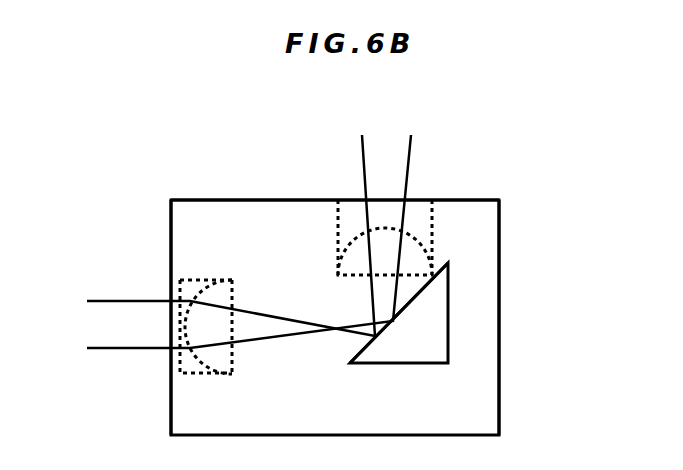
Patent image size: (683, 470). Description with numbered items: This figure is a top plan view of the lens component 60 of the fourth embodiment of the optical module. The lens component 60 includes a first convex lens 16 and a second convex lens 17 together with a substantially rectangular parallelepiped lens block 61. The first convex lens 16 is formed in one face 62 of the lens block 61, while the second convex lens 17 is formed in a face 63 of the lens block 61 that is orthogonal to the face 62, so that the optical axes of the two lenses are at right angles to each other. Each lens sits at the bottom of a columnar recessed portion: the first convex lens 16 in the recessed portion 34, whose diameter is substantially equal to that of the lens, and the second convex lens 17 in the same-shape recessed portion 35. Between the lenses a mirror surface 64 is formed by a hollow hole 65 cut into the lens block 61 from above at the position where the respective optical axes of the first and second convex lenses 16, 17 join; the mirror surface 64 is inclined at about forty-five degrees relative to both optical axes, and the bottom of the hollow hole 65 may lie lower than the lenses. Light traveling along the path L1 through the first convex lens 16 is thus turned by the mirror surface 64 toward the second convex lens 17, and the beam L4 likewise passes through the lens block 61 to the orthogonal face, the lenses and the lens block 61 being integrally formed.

The lens component 60 is at (563, 192).
The lens block 61 is at (490, 212).
The face of lens block 62 is at (170, 226).
The face of lens block 63 is at (283, 199).
The mirror surface 64 is at (404, 309).
The hollow hole 65 is at (433, 346).
The first convex lens 16 is at (202, 296).
The second convex lens 17 is at (353, 253).
The recessed portion 34 is at (178, 362).
The recessed portion 35 is at (420, 217).
The laser beam L1 is at (100, 300).
The laser beam L4 is at (102, 349).